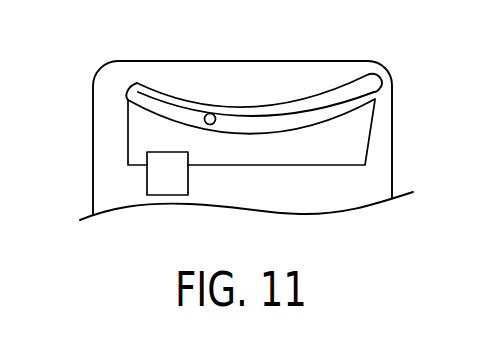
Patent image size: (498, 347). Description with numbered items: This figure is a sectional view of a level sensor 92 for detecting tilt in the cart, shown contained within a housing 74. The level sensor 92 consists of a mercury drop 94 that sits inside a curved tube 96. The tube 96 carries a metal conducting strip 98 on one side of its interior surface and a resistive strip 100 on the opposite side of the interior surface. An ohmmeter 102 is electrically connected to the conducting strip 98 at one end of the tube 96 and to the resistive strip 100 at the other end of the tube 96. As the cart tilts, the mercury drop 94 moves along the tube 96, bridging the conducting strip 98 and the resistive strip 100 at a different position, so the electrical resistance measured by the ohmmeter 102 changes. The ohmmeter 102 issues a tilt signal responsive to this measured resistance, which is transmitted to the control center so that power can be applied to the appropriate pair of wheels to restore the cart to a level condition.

The housing 74 is at (148, 61).
The level sensor 92 is at (299, 76).
The mercury drop 94 is at (210, 113).
The tube 96 is at (312, 108).
The conducting strip 98 is at (162, 92).
The resistive strip 100 is at (258, 136).
The ohmmeter 102 is at (151, 183).